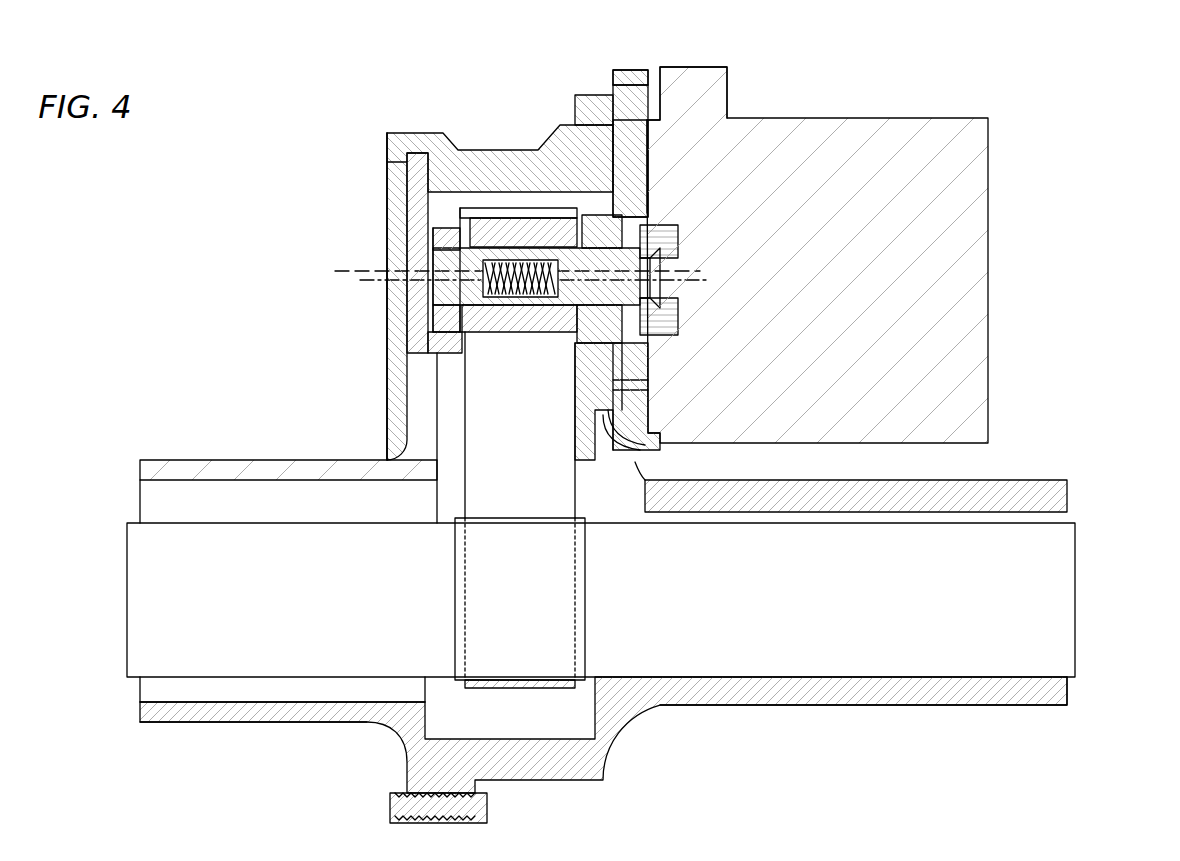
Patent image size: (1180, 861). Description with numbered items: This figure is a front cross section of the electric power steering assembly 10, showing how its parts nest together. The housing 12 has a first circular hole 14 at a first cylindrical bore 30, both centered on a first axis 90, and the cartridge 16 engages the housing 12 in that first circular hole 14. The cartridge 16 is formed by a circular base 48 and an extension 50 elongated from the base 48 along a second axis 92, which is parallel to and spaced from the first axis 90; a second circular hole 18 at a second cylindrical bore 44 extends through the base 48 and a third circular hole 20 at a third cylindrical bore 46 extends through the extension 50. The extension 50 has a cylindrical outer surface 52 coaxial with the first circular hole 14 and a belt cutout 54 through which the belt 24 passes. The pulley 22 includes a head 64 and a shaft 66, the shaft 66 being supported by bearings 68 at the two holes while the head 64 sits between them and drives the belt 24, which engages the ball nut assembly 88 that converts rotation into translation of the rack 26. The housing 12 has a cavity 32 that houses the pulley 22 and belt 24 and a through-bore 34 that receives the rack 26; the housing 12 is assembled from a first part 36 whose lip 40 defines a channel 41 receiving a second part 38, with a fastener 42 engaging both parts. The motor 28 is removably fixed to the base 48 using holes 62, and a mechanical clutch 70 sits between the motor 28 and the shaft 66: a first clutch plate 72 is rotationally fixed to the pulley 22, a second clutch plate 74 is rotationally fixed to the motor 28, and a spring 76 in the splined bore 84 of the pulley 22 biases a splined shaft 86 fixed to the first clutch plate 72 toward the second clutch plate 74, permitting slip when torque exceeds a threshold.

The electric power steering assembly 10 is at (235, 245).
The housing 12 is at (632, 737).
The first circular hole 14 is at (580, 388).
The cartridge 16 is at (628, 65).
The second circular hole 18 is at (648, 363).
The third circular hole 20 is at (452, 345).
The pulley 22 is at (462, 245).
The belt 24 is at (495, 478).
The rack 26 is at (247, 550).
The motor 28 is at (1015, 268).
The first cylindrical bore 30 is at (585, 120).
The cavity 32 is at (437, 415).
The through-bore 34 is at (1050, 518).
The first part 36 is at (890, 705).
The second part 38 is at (330, 722).
The lip 40 is at (388, 150).
The channel 41 is at (433, 228).
The fastener 42 is at (487, 810).
The second cylindrical bore 44 is at (640, 200).
The third cylindrical bore 46 is at (468, 320).
The base 48 is at (635, 440).
The extension 50 is at (500, 268).
The cylindrical outer surface 52 is at (540, 258).
The belt cutout 54 is at (470, 255).
The holes 62 is at (640, 160).
The head 64 is at (520, 228).
The shaft 66 is at (480, 235).
The bearings 68 is at (445, 248).
The mechanical clutch 70 is at (668, 210).
The first clutch plate 72 is at (700, 278).
The second clutch plate 74 is at (665, 265).
The spring 76 is at (600, 240).
The splined bore 84 is at (585, 288).
The splined shaft 86 is at (640, 240).
The ball nut assembly 88 is at (555, 640).
The first axis 90 is at (355, 270).
The second axis 92 is at (390, 285).